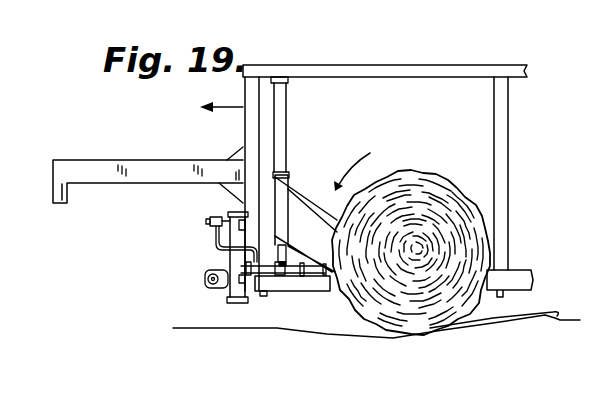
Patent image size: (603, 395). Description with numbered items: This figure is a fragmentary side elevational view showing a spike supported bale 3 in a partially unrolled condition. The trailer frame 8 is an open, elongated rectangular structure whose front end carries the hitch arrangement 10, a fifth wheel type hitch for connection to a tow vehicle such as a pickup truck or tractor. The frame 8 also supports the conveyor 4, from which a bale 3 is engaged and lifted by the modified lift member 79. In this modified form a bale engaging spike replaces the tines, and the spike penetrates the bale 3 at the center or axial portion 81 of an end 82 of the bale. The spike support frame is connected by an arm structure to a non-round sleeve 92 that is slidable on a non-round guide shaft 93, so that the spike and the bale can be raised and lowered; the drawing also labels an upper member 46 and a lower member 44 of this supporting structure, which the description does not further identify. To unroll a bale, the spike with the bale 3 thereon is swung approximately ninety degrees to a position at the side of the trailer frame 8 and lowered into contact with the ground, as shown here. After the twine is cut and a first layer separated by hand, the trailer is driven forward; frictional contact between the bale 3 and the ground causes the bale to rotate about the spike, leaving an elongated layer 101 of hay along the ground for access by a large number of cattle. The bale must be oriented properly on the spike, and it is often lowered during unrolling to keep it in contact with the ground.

The bale 3 is at (462, 196).
The conveyor 4 is at (198, 282).
The trailer frame 8 is at (442, 62).
The hitch arrangement 10 is at (91, 175).
The base beam 44 is at (273, 282).
The top beam 46 is at (345, 72).
The modified lift member 79 is at (297, 185).
The center or axial portion 81 is at (417, 248).
The end of the bale 82 is at (387, 195).
The non-round sleeve 92 is at (283, 214).
The non-round guide shaft 93 is at (282, 110).
The elongated layer of hay 101 is at (500, 325).